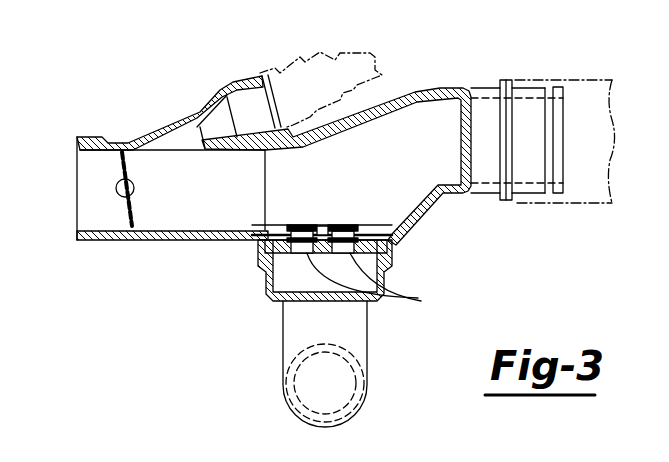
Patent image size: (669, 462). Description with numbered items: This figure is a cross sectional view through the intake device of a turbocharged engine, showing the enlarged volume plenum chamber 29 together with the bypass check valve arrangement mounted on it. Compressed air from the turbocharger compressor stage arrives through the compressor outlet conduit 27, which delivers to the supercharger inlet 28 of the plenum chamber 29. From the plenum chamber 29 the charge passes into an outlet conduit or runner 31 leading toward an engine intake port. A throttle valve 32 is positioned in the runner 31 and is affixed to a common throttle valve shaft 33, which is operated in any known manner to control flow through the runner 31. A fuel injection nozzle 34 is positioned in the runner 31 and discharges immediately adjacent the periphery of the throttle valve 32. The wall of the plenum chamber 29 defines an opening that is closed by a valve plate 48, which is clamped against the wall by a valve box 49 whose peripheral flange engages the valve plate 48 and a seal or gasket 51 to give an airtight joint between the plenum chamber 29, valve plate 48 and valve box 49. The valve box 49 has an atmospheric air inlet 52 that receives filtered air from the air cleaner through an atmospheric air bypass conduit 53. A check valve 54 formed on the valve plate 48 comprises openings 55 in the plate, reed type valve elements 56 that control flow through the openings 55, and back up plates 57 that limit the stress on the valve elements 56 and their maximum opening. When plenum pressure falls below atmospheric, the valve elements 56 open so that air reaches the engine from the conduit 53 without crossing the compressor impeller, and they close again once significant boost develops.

The compressor outlet conduit 27 is at (597, 204).
The supercharger inlet 28 is at (476, 88).
The plenum chamber 29 is at (403, 87).
The runner 31 is at (84, 242).
The throttle valve 32 is at (113, 241).
The throttle valve shaft 33 is at (136, 191).
The fuel injection nozzle 34 is at (337, 44).
The valve plate 48 is at (263, 273).
The valve box 49 is at (271, 312).
The seal or gasket 51 is at (260, 244).
The atmospheric air inlet 52 is at (352, 388).
The atmospheric air bypass conduit 53 is at (362, 358).
The check valve 54 is at (281, 210).
The opening 55 is at (379, 284).
The reed type valve element 56 is at (292, 224).
The back up plate 57 is at (312, 225).